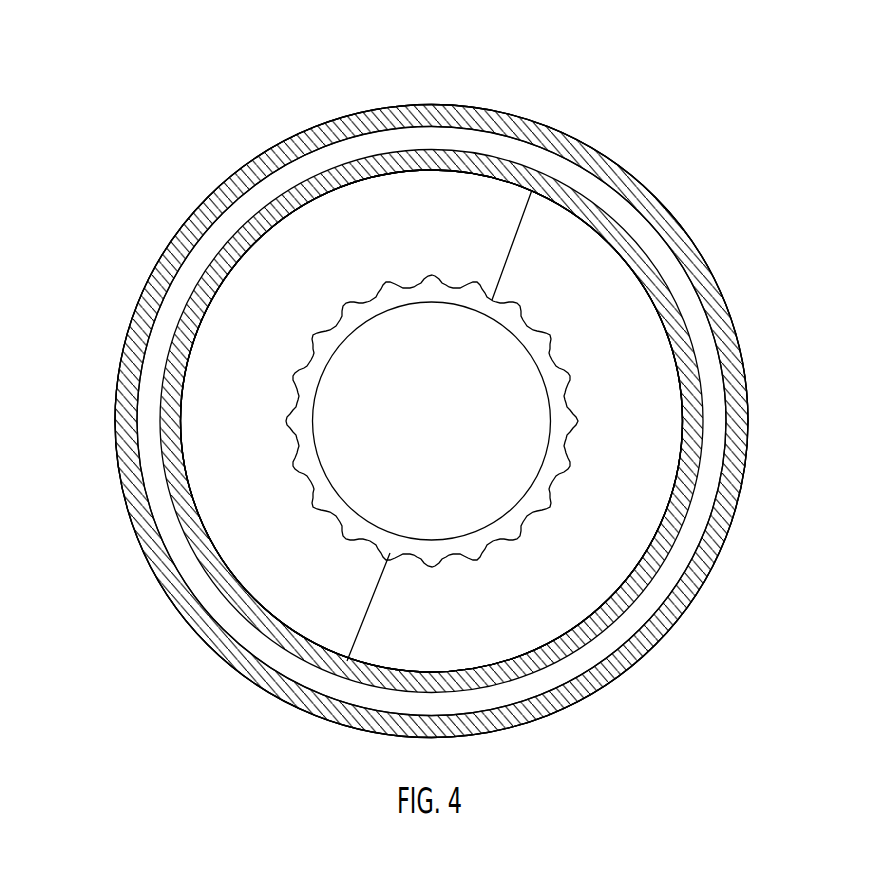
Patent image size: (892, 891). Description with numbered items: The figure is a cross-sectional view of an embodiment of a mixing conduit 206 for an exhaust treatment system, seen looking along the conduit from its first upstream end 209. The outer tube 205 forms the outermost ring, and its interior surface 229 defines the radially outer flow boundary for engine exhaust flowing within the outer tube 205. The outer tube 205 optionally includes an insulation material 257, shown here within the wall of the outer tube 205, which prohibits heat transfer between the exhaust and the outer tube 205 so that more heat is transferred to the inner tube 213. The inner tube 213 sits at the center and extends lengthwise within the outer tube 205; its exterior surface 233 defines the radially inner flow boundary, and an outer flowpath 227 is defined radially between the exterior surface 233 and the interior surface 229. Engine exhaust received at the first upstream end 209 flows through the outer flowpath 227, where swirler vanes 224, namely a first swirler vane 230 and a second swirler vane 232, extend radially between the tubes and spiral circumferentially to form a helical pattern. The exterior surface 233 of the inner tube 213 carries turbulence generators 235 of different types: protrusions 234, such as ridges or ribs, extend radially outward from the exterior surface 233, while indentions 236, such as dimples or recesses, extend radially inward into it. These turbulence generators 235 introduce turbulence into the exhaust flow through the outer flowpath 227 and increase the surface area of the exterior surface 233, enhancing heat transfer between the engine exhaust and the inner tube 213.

The outer tube 205 is at (190, 221).
The mixing conduit 206 is at (181, 76).
The first upstream end 209 is at (689, 76).
The inner tube 213 is at (330, 513).
The swirler vanes 224 is at (633, 317).
The outer flowpath 227 is at (245, 391).
The interior surface 229 is at (317, 200).
The first swirler vane 230 is at (212, 502).
The second swirler vane 232 is at (622, 565).
The exterior surface 233 is at (553, 357).
The protrusions 234 is at (397, 280).
The turbulence generators 235 is at (315, 318).
The indentions 236 is at (510, 320).
The insulation material 257 is at (550, 150).